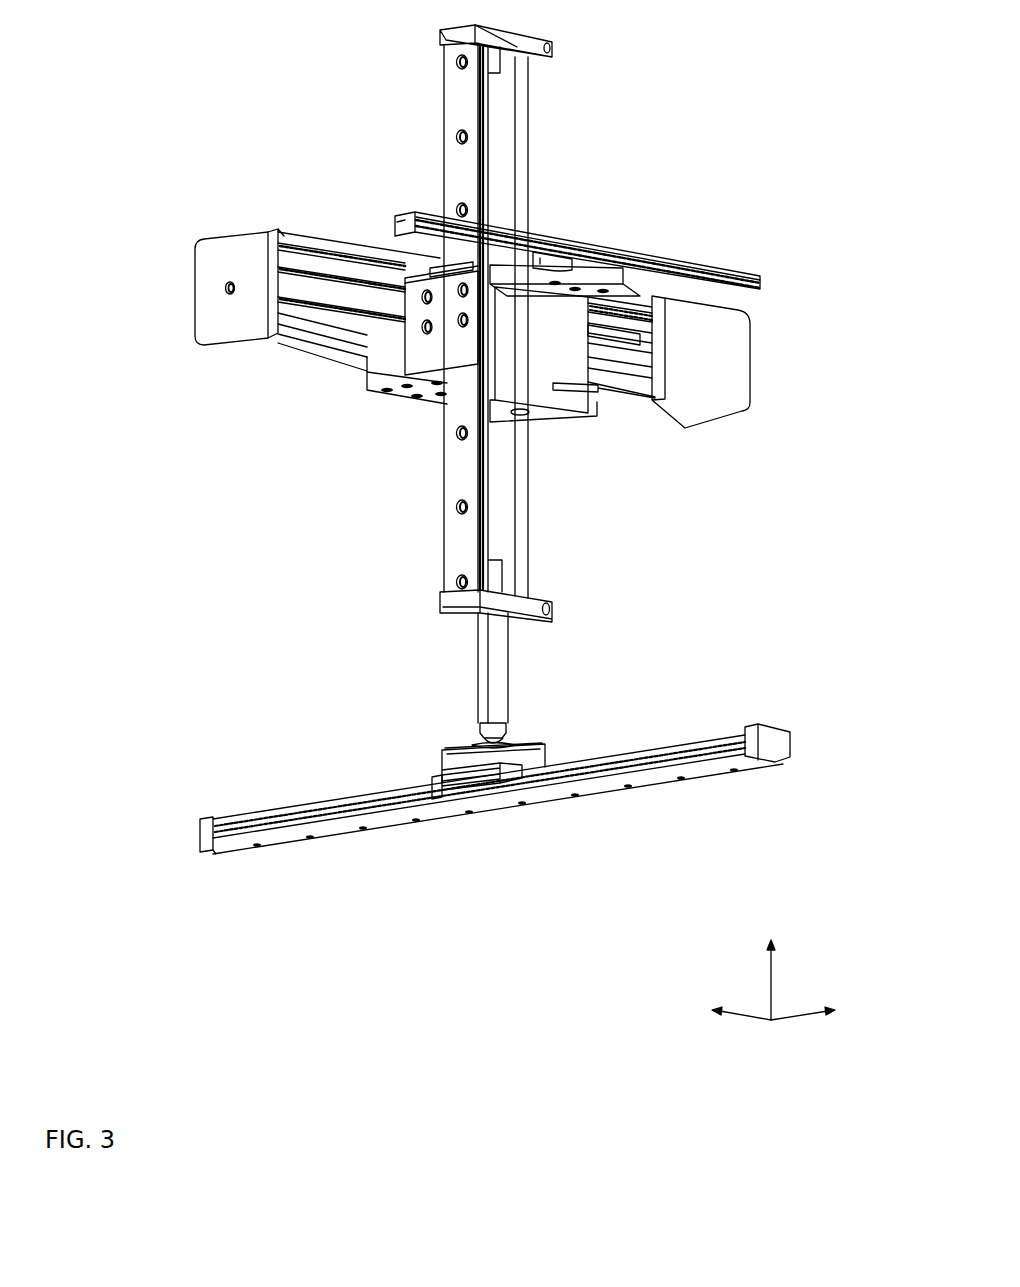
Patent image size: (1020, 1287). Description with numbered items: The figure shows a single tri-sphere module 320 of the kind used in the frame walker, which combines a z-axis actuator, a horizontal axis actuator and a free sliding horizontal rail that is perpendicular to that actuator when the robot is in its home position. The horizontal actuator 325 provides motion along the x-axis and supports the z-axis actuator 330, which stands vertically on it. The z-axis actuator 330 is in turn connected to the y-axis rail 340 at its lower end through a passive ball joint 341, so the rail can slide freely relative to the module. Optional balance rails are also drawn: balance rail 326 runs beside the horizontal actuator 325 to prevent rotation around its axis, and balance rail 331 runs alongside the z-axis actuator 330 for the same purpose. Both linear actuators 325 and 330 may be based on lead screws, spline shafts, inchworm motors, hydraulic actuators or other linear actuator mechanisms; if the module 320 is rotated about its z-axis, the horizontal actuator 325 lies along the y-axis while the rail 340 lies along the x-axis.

The tri-sphere module 320 is at (264, 501).
The horizontal actuator 325 is at (767, 350).
The balance rail 326 is at (662, 240).
The z-axis actuator 330 is at (570, 432).
The balance rail 331 is at (437, 537).
The y-axis rail 340 is at (610, 805).
The passive ball joint 341 is at (535, 738).